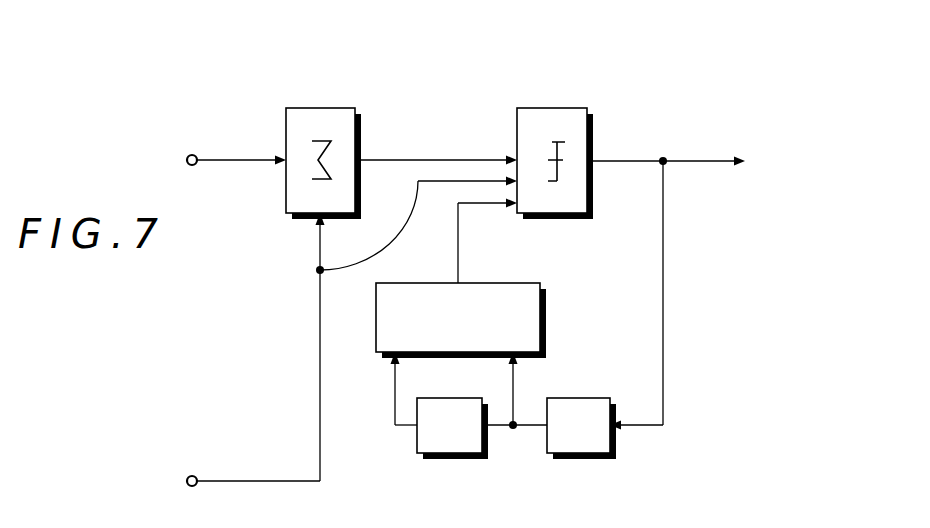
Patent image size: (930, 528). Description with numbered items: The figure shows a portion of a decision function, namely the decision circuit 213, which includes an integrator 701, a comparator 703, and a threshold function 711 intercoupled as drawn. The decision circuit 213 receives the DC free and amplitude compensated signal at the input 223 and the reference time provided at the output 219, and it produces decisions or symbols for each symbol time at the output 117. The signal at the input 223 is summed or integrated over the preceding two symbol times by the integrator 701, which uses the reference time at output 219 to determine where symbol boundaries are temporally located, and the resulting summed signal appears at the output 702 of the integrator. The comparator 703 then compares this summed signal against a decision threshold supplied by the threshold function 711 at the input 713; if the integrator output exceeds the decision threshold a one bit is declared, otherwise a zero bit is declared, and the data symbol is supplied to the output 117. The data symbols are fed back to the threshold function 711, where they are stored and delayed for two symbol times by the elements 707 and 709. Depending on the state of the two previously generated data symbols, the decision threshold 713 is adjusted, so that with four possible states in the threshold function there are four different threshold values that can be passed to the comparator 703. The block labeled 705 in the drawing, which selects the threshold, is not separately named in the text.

The decision circuit 213 is at (174, 310).
The input 223 is at (210, 160).
The integrator 701 is at (322, 108).
The output of the integrator 702 is at (410, 160).
The comparator 703 is at (553, 108).
The output 117 is at (713, 161).
The output providing reference time 219 is at (228, 481).
The decision threshold input 713 is at (458, 238).
The threshold select 705 is at (521, 283).
The threshold function 711 is at (576, 349).
The delay element 709 is at (457, 459).
The delay element 707 is at (585, 459).